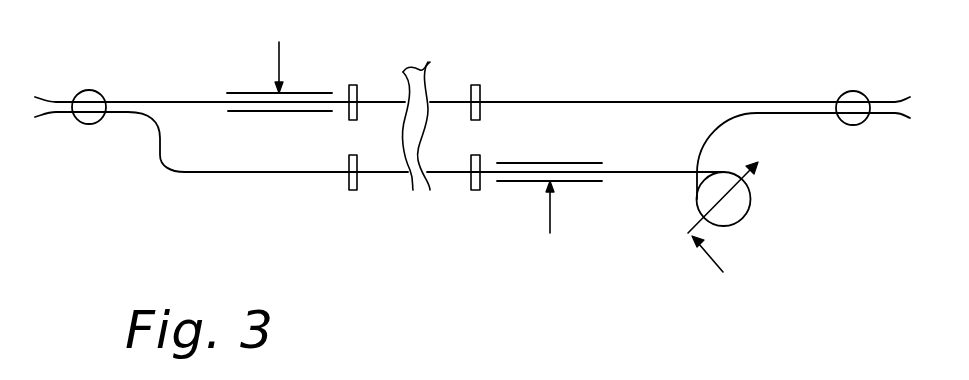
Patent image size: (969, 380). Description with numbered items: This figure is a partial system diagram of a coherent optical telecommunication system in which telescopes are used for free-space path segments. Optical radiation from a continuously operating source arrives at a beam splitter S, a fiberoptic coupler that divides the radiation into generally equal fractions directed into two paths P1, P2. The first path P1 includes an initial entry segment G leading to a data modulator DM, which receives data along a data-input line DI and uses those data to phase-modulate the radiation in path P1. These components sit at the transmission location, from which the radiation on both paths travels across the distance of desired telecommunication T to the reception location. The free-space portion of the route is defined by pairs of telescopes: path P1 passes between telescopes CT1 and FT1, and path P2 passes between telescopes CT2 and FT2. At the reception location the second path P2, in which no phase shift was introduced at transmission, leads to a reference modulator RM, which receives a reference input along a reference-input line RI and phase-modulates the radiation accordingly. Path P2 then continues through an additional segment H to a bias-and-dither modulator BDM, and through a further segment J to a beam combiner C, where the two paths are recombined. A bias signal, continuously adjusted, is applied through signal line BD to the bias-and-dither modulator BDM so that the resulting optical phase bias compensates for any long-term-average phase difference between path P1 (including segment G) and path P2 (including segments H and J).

The beam splitter S is at (78, 95).
The beam combiner C is at (841, 95).
The first path P1 is at (157, 102).
The second path P2 is at (200, 173).
The initial entry segment G is at (190, 103).
The data modulator DM is at (238, 92).
The data-input line DI is at (279, 53).
The telescope CT1 is at (357, 92).
The telescope CT2 is at (353, 190).
The distance of desired telecommunication T is at (430, 62).
The telescope FT1 is at (480, 87).
The telescope FT2 is at (473, 190).
The reference modulator RM is at (516, 183).
The reference-input line RI is at (550, 223).
The additional segment H is at (663, 171).
The further segment J is at (722, 124).
The bias-and-dither modulator BDM is at (750, 192).
The signal line BD is at (723, 272).